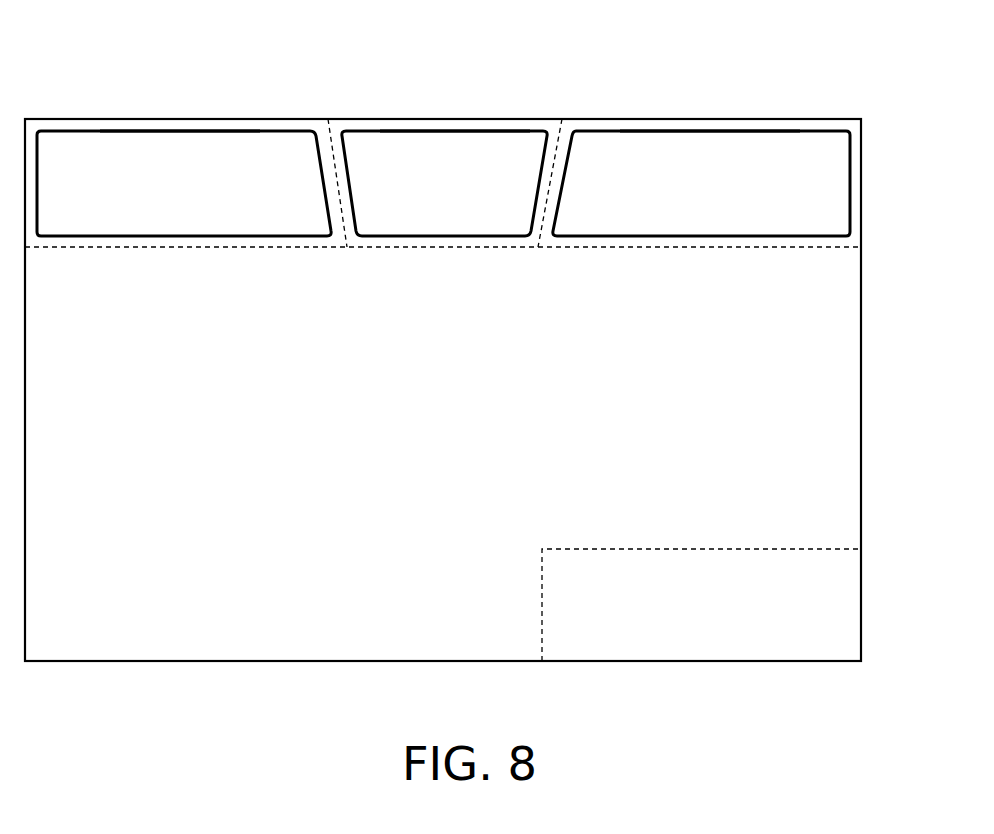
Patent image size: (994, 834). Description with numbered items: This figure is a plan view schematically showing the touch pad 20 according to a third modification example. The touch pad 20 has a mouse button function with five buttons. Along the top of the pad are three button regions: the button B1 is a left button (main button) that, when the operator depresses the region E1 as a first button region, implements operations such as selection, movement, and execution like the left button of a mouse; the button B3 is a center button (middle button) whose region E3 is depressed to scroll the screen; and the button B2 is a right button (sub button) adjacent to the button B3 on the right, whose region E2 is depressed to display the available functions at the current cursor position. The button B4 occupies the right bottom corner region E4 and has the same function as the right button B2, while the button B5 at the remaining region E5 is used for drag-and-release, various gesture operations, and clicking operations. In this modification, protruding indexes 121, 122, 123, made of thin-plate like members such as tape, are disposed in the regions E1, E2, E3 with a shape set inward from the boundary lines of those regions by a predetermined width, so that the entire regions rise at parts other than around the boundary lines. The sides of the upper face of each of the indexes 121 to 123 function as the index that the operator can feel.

The touch pad 20 is at (842, 81).
The index 121 is at (67, 150).
The index 122 is at (613, 150).
The index 123 is at (366, 150).
The region E1 is at (170, 119).
The button B1 is at (228, 128).
The region E2 is at (691, 119).
The button B2 is at (747, 128).
The region E3 is at (450, 119).
The button B3 is at (505, 128).
The right bottom corner region E4 is at (861, 633).
The button B4 is at (847, 574).
The region E5 is at (861, 441).
The button B5 is at (847, 383).